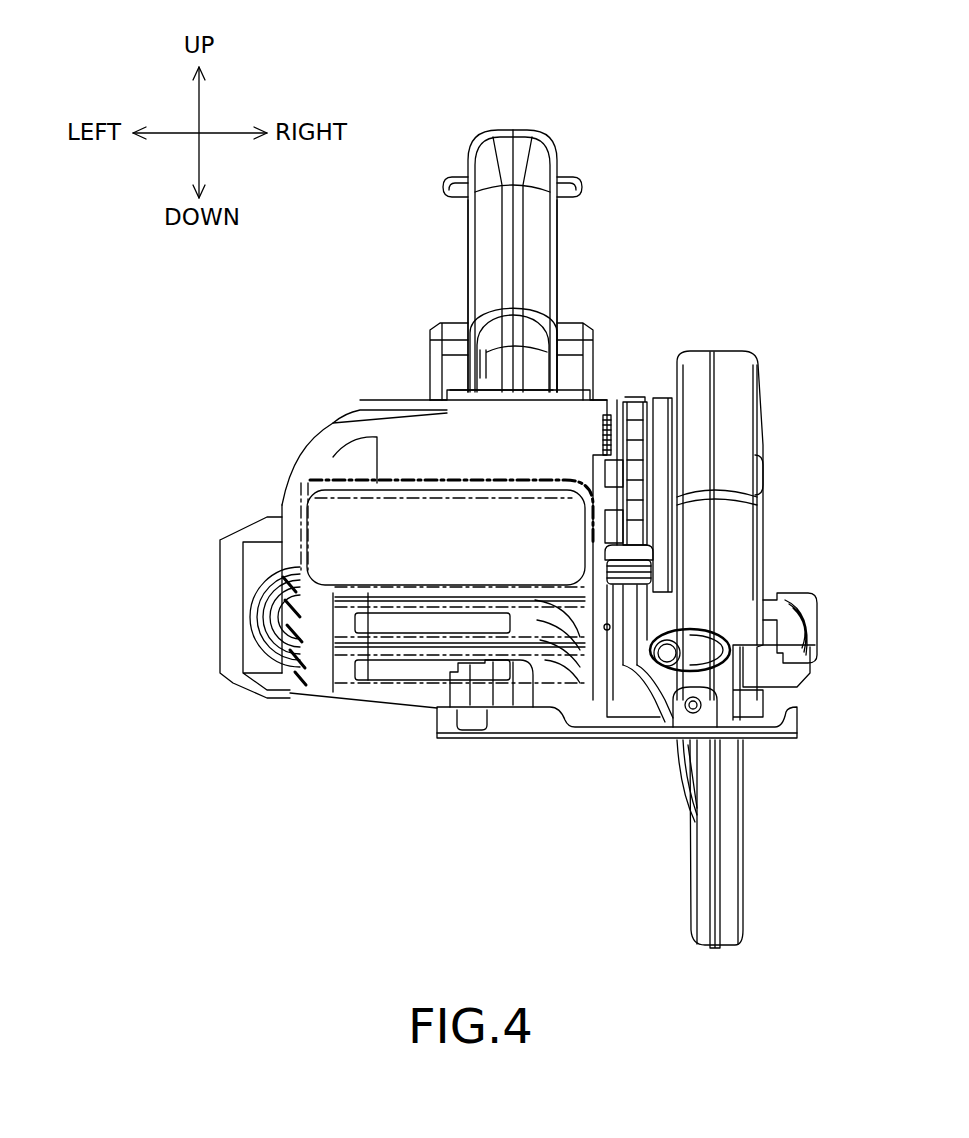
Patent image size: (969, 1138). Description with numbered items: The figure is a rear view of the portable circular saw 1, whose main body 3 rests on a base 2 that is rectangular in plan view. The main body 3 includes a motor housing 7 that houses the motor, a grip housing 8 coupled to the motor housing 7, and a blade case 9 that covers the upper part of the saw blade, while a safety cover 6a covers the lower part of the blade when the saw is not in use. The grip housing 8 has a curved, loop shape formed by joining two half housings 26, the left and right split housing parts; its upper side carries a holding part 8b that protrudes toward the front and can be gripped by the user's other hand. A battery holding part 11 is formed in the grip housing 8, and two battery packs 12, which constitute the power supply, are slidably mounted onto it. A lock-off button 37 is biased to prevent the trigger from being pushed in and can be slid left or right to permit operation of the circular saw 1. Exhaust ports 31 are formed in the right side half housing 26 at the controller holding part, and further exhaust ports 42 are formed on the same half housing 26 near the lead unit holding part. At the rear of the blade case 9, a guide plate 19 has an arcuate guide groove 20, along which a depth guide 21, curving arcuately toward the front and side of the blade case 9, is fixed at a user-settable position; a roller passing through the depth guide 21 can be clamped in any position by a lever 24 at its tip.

The circular saw 1 is at (630, 193).
The base 2 is at (528, 726).
The main body 3 is at (662, 344).
The safety cover 6a is at (733, 852).
The motor housing 7 is at (257, 567).
The grip housing 8 is at (517, 131).
The holding part 8b is at (452, 333).
The blade case 9 is at (737, 370).
The battery holding part 11 is at (394, 412).
The battery packs 12 is at (340, 633).
The guide plate 19 is at (660, 700).
The guide groove 20 is at (718, 662).
The depth guide 21 is at (638, 410).
The lever 24 is at (633, 553).
The half housings 26 is at (483, 222).
The exhaust ports 31 is at (607, 452).
The lock-off button 37 is at (458, 178).
The exhaust ports 42 is at (560, 332).